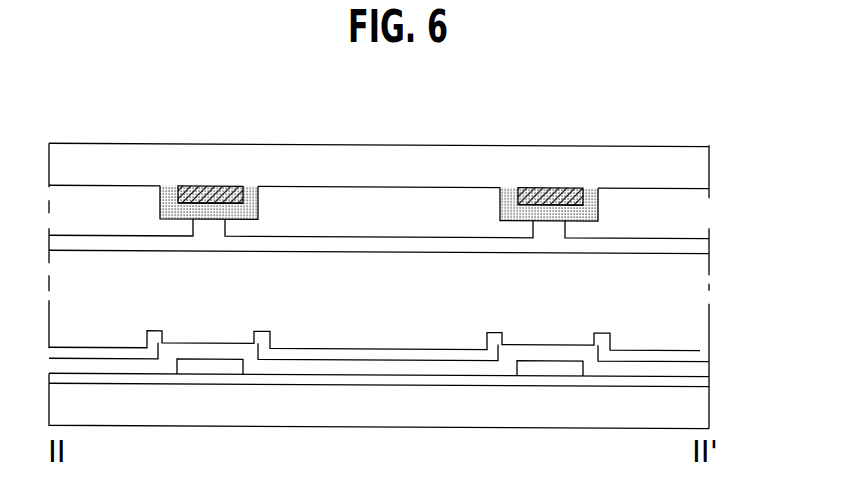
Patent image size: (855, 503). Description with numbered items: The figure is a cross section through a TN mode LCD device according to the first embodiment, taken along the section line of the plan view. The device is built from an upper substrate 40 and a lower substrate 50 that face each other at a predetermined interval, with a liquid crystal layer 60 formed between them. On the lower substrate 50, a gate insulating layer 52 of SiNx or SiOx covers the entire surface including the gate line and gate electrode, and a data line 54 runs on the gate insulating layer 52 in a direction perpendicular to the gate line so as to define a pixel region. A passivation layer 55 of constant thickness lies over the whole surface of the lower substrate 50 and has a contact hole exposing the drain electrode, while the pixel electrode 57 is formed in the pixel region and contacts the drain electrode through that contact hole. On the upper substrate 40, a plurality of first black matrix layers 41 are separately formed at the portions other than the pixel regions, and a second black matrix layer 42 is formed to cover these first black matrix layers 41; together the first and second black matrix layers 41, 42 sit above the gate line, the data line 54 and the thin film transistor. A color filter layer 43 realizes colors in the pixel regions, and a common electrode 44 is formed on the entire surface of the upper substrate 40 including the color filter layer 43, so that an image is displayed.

The upper substrate 40 is at (701, 168).
The first black matrix layers 41 is at (213, 194).
The second black matrix layer 42 is at (258, 210).
The color filter layer 43 is at (701, 213).
The common electrode 44 is at (701, 248).
The lower substrate 50 is at (700, 408).
The gate insulating layer 52 is at (700, 378).
The data line 54 is at (207, 364).
The passivation layer 55 is at (706, 364).
The pixel electrode 57 is at (700, 351).
The liquid crystal layer 60 is at (701, 293).